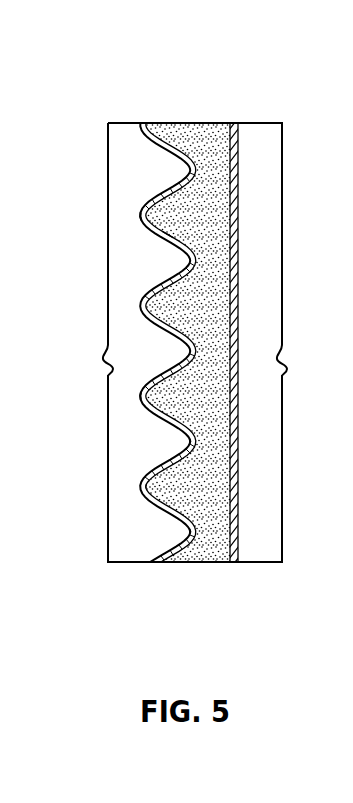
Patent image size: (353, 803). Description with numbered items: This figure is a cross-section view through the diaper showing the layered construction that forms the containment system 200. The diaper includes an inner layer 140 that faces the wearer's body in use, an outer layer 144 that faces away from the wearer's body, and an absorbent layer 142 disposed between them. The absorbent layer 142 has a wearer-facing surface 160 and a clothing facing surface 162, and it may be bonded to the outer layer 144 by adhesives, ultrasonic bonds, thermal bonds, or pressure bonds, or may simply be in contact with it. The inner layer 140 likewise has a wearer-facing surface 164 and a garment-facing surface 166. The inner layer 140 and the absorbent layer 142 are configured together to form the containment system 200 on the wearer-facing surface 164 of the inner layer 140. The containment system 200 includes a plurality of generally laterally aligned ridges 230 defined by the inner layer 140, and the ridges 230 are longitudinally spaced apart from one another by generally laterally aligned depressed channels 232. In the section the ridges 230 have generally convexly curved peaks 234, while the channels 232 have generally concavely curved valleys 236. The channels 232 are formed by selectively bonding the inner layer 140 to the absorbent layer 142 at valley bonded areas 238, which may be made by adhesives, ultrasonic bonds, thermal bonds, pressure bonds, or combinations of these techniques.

The containment system 200 is at (110, 50).
The inner layer 140 is at (143, 129).
The absorbent layer 142 is at (195, 122).
The outer layer 144 is at (233, 122).
The wearer-facing surface 160 is at (178, 200).
The clothing facing surface 162 is at (220, 213).
The wearer-facing surface 164 is at (157, 242).
The garment-facing surface 166 is at (132, 213).
The ridges 230 is at (139, 396).
The depressed channels 232 is at (190, 442).
The peaks 234 is at (150, 488).
The valleys 236 is at (190, 534).
The valley bonded areas 238 is at (200, 530).